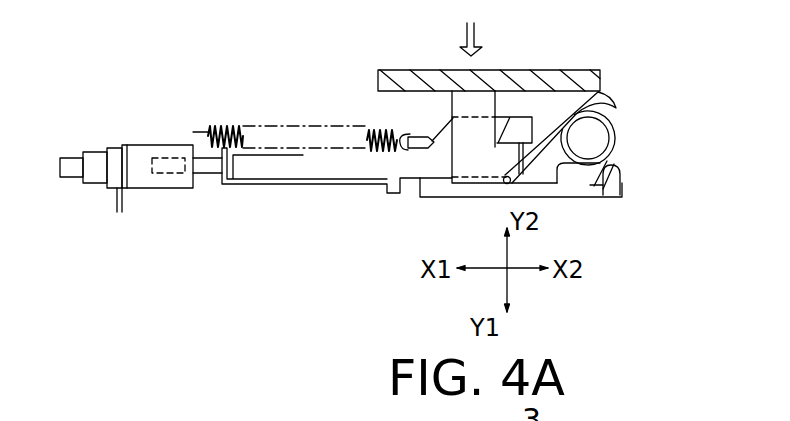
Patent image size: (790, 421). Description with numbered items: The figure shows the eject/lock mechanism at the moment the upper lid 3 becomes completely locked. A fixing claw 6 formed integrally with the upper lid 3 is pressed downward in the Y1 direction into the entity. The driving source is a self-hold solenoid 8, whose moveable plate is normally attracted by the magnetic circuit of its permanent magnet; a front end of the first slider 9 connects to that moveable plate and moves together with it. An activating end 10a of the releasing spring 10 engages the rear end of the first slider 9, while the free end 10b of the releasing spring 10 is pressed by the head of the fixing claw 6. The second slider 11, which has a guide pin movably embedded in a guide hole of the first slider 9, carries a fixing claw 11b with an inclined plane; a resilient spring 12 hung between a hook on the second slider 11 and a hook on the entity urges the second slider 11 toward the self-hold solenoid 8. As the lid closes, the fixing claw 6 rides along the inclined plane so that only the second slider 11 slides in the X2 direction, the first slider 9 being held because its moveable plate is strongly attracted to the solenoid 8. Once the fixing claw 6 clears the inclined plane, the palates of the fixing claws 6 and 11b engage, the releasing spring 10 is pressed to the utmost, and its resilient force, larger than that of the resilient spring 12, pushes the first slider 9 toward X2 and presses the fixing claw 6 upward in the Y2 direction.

The upper lid 3 is at (546, 70).
The fixing claw 6 is at (463, 148).
The self-hold solenoid 8 is at (105, 197).
The first slider 9 is at (447, 201).
The releasing spring 10 is at (623, 142).
The activating end 10a is at (621, 193).
The free end 10b is at (512, 184).
The second slider 11 is at (327, 163).
The fixing claw 11b is at (525, 128).
The resilient spring 12 is at (377, 130).